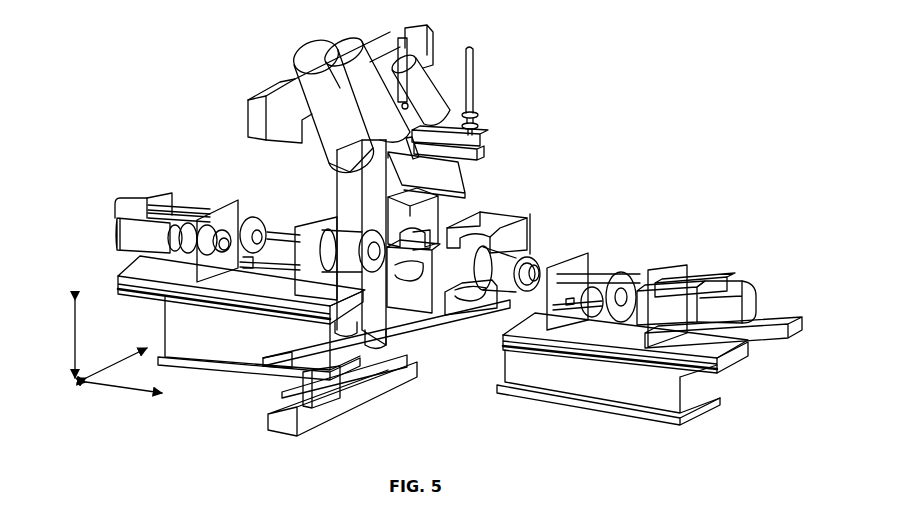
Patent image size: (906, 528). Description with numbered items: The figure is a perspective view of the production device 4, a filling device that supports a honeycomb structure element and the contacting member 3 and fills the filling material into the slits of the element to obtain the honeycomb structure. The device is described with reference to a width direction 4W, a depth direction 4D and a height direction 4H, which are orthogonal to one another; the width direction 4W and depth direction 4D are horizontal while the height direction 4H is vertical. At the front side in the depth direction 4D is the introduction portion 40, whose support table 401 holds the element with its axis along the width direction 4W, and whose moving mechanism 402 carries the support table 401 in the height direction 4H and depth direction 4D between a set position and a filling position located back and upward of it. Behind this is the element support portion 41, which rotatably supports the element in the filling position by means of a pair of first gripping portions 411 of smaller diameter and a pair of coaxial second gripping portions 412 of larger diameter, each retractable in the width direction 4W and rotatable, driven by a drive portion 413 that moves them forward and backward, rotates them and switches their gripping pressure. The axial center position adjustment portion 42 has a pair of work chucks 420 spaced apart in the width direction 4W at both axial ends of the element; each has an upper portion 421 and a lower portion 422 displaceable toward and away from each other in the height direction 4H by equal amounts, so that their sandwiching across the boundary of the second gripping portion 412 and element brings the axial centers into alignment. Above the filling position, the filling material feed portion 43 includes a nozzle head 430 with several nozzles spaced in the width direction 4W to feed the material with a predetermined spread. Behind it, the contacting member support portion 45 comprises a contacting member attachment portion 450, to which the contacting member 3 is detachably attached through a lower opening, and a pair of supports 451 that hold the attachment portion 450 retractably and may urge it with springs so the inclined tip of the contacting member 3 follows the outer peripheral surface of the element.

The contacting member 3 is at (481, 158).
The production device 4 is at (240, 100).
The introduction portion 40 is at (433, 349).
The support table 401 is at (372, 370).
The moving mechanism 402 is at (345, 400).
The element support portion 41 is at (742, 280).
The first gripping portions 411 is at (340, 236).
The second gripping portions 412 is at (347, 248).
The drive portion 413 is at (254, 216).
The axial center position adjustment portion 42 is at (418, 276).
The work chucks 420 is at (533, 192).
The upper portion 421 is at (422, 322).
The lower portion 422 is at (448, 320).
The filling material feed portion 43 is at (287, 60).
The nozzle head 430 is at (466, 181).
The contacting member support portion 45 is at (479, 58).
The contacting member attachment portion 450 is at (485, 133).
The supports 451 is at (477, 114).
The height direction 4H is at (72, 338).
The depth direction 4D is at (110, 360).
The width direction 4W is at (126, 397).